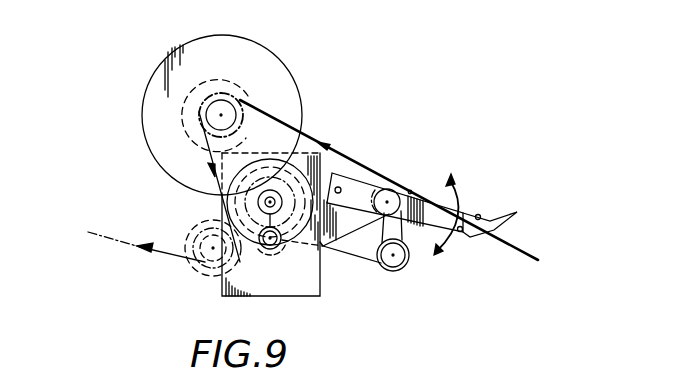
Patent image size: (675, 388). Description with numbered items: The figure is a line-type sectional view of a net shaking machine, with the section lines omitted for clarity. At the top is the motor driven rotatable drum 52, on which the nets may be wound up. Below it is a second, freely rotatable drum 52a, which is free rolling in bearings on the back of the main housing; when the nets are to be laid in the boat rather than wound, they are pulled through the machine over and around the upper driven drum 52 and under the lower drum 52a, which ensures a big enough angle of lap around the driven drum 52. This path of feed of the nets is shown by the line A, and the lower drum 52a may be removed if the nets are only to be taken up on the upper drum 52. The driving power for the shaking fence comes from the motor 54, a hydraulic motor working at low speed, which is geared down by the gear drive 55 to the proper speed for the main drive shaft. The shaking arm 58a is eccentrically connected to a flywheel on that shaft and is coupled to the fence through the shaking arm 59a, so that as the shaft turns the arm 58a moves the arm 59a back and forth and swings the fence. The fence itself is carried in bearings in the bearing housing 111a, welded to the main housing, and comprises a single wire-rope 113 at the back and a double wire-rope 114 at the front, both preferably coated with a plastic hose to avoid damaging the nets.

The motor driven rotatable drum 52 is at (143, 105).
The freely rotatable drum 52a is at (203, 258).
The motor 54 is at (278, 249).
The gear drive 55 is at (252, 218).
The shaking arm 58a is at (362, 245).
The shaking arm 59a is at (405, 228).
The bearing housing 111a is at (343, 218).
The single wire-rope 113 is at (338, 187).
The double wire-rope 114 is at (507, 213).
The path of feed of the nets A is at (222, 187).